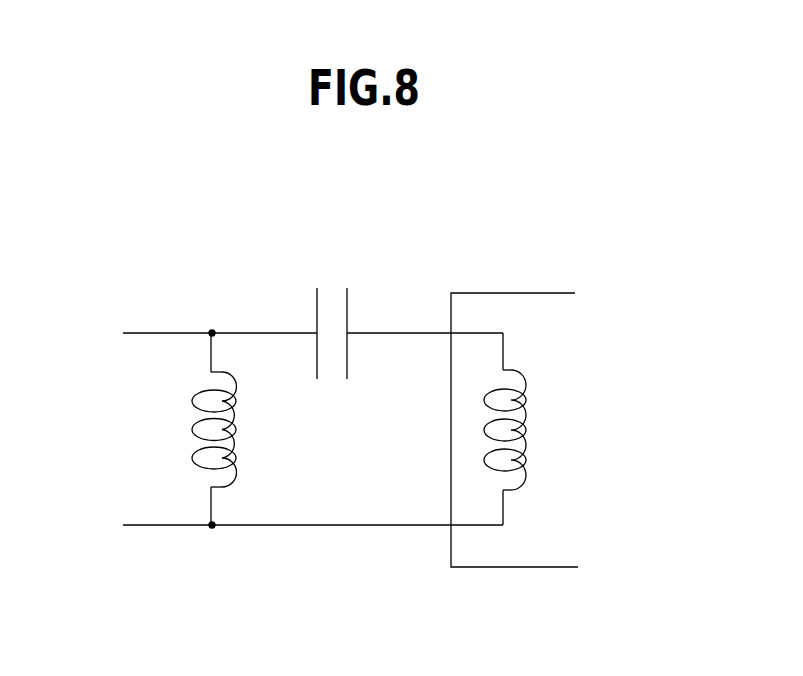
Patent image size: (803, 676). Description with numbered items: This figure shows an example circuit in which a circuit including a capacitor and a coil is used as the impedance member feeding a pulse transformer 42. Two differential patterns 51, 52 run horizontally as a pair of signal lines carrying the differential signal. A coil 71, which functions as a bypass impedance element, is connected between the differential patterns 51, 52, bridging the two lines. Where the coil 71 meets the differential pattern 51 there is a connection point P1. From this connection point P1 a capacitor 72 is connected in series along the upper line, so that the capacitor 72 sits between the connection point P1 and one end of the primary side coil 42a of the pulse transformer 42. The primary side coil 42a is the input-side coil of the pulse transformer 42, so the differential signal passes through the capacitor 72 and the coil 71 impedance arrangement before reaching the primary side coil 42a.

The pulse transformer 42 is at (545, 292).
The primary side coil 42a is at (542, 452).
The differential pattern 51 is at (140, 333).
The differential pattern 52 is at (152, 525).
The coil 71 is at (250, 449).
The capacitor 72 is at (360, 306).
The connection point P1 is at (212, 333).